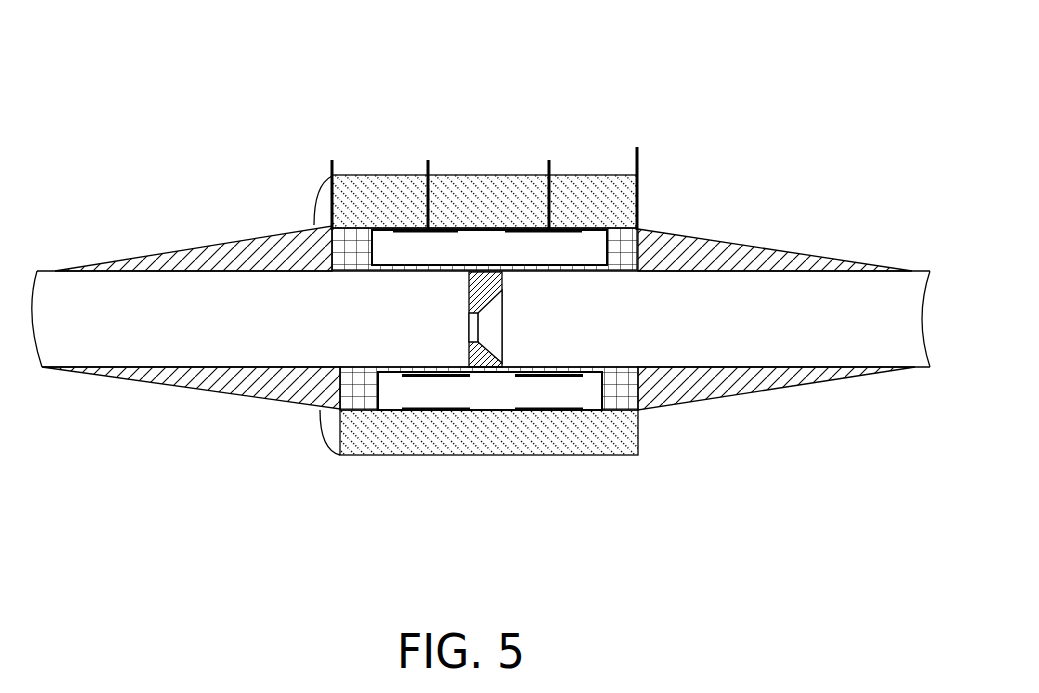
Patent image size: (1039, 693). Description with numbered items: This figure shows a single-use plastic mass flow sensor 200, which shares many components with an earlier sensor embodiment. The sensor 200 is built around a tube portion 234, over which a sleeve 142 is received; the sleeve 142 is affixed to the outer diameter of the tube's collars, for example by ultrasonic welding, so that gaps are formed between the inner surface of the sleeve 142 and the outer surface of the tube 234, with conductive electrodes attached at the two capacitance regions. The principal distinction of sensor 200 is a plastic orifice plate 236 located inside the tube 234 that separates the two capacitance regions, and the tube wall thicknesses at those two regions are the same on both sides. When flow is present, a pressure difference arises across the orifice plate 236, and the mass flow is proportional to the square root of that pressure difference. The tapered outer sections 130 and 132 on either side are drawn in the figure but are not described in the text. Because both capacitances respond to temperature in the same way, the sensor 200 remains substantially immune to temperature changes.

The sensor 200 is at (657, 60).
The first pipe section 130 is at (172, 387).
The second pipe section 132 is at (818, 385).
The sleeve 142 is at (582, 176).
The tube portion 234 is at (640, 252).
The plastic orifice plate 236 is at (469, 355).